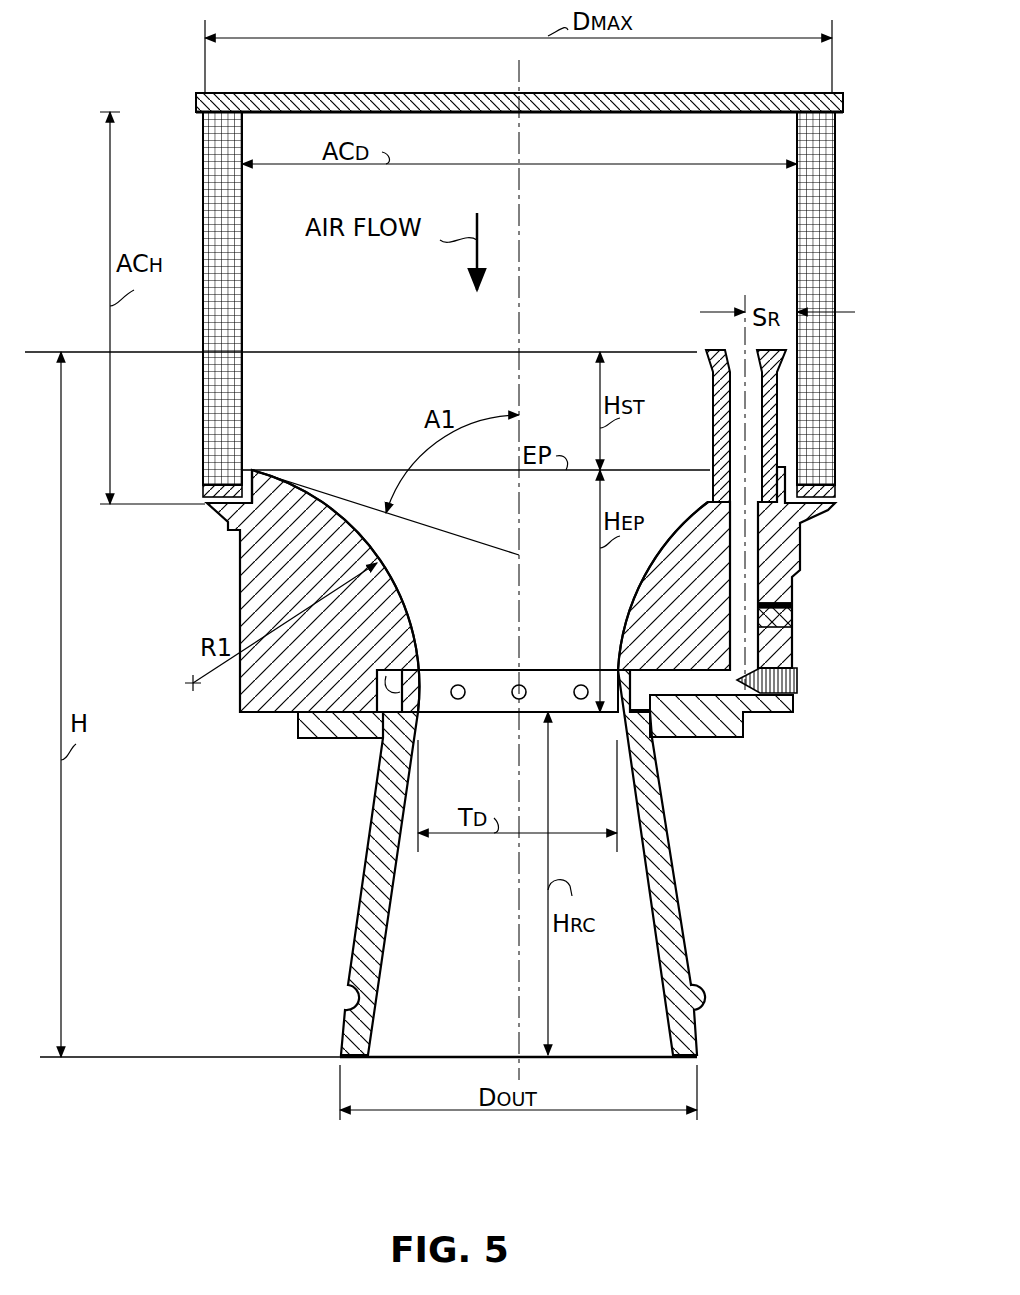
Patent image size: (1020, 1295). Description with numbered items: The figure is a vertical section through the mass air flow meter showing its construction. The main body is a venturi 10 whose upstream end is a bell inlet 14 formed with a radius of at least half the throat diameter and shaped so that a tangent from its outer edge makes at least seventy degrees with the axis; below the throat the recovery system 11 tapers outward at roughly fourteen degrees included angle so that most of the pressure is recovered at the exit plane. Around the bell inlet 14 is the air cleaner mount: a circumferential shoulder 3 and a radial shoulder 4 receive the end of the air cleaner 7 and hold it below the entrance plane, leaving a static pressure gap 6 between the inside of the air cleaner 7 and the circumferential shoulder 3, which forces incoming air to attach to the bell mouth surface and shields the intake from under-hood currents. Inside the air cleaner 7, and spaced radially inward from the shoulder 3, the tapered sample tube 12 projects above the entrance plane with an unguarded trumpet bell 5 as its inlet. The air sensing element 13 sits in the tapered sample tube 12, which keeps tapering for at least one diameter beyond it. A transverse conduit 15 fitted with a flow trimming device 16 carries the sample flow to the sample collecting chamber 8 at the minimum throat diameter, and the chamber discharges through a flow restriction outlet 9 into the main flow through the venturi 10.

The circumferential shoulder 3 is at (254, 470).
The radial shoulder 4 is at (215, 484).
The trumpet bell 5 is at (716, 346).
The static pressure gap 6 is at (248, 462).
The air cleaner 7 is at (797, 212).
The sample collecting chamber 8 is at (400, 668).
The flow restriction outlet 9 is at (578, 684).
The venturi 10 is at (330, 650).
The recovery system 11 is at (390, 933).
The tapered sample tube 12 is at (764, 436).
The air sensing element 13 is at (738, 620).
The bell inlet 14 is at (640, 588).
The transverse conduit 15 is at (702, 686).
The flow trimming device 16 is at (800, 680).